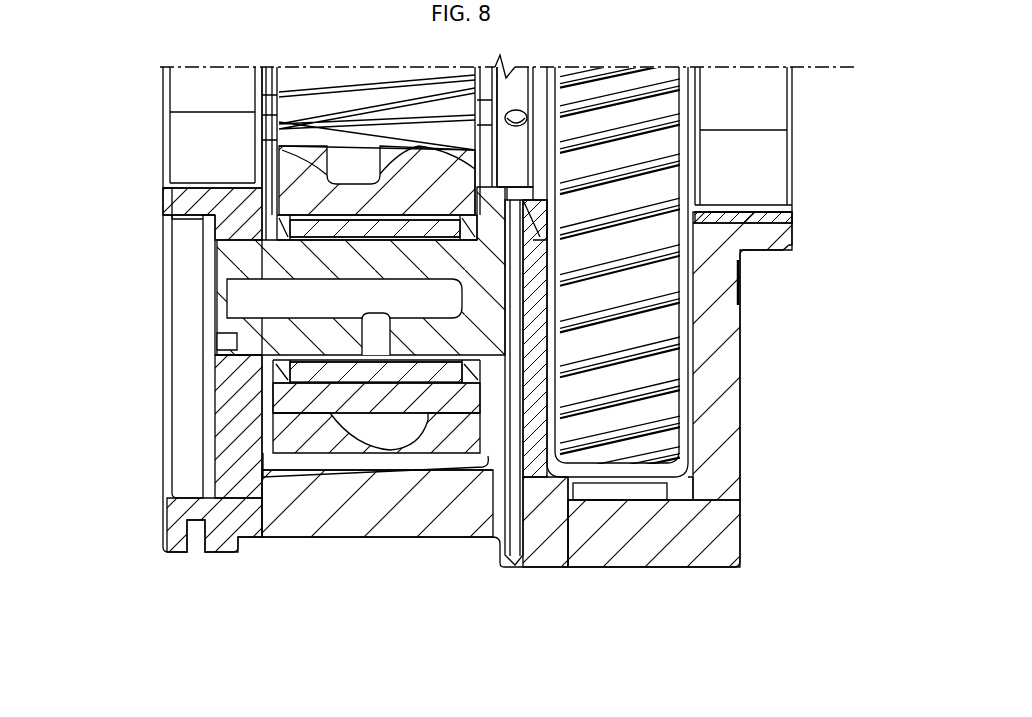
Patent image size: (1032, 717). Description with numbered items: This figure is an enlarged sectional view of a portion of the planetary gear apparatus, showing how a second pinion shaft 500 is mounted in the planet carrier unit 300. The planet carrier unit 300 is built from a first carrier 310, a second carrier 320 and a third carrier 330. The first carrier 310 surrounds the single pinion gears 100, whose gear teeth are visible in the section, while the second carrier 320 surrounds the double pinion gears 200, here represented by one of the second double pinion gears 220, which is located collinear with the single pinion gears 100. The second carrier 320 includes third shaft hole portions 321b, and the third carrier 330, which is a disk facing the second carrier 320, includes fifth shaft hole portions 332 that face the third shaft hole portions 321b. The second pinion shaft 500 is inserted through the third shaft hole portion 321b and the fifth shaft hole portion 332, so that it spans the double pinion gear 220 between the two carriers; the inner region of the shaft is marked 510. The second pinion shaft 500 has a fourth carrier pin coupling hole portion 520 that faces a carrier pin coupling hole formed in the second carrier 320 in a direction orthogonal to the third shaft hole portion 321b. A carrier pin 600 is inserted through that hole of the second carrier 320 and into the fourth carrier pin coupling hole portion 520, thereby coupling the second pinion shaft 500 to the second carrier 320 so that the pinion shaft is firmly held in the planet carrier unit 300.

The single pinion gears 100 is at (627, 295).
The double pinion gears 200 is at (379, 360).
The second double pinion gears 220 is at (377, 420).
The planet carrier unit 300 is at (500, 377).
The first carrier 310 is at (718, 387).
The second carrier 320 is at (547, 543).
The third shaft hole portions 321b is at (535, 242).
The third carrier 330 is at (232, 527).
The fifth shaft hole portions 332 is at (172, 219).
The second pinion shafts 500 is at (247, 258).
The bore of coupling member 510 is at (290, 317).
The fourth carrier pin coupling hole portion 520 is at (548, 345).
The carrier pins 600 is at (517, 567).